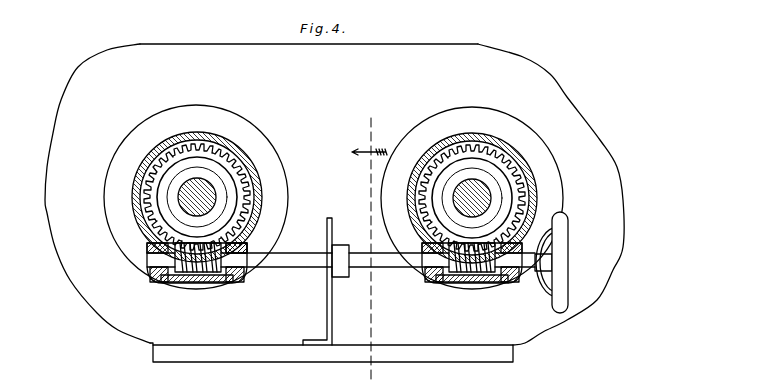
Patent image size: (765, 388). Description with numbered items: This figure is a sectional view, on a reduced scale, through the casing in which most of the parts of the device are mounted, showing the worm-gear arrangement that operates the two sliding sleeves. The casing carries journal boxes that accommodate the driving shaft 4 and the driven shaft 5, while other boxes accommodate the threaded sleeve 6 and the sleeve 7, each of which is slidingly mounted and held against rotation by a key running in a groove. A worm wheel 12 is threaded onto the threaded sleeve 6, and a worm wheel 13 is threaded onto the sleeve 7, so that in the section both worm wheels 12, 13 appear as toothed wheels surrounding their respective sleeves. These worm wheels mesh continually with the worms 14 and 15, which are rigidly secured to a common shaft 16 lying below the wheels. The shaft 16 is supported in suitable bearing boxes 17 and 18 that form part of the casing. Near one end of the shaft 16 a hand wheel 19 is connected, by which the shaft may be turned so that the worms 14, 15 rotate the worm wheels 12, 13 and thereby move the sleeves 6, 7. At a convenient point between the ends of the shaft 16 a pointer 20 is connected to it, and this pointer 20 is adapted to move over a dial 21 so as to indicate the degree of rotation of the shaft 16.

The driving shaft 4 is at (472, 198).
The driven shaft 5 is at (245, 241).
The threaded sleeve 6 is at (551, 194).
The sleeve 7 is at (103, 201).
The worm wheel 12 is at (488, 167).
The worm wheel 13 is at (203, 147).
The worm 14 is at (468, 284).
The worm 15 is at (195, 286).
The shaft 16 is at (374, 268).
The bearing box 17 is at (430, 288).
The bearing box 18 is at (244, 278).
The hand wheel 19 is at (569, 268).
The pointer 20 is at (347, 244).
The dial 21 is at (326, 228).